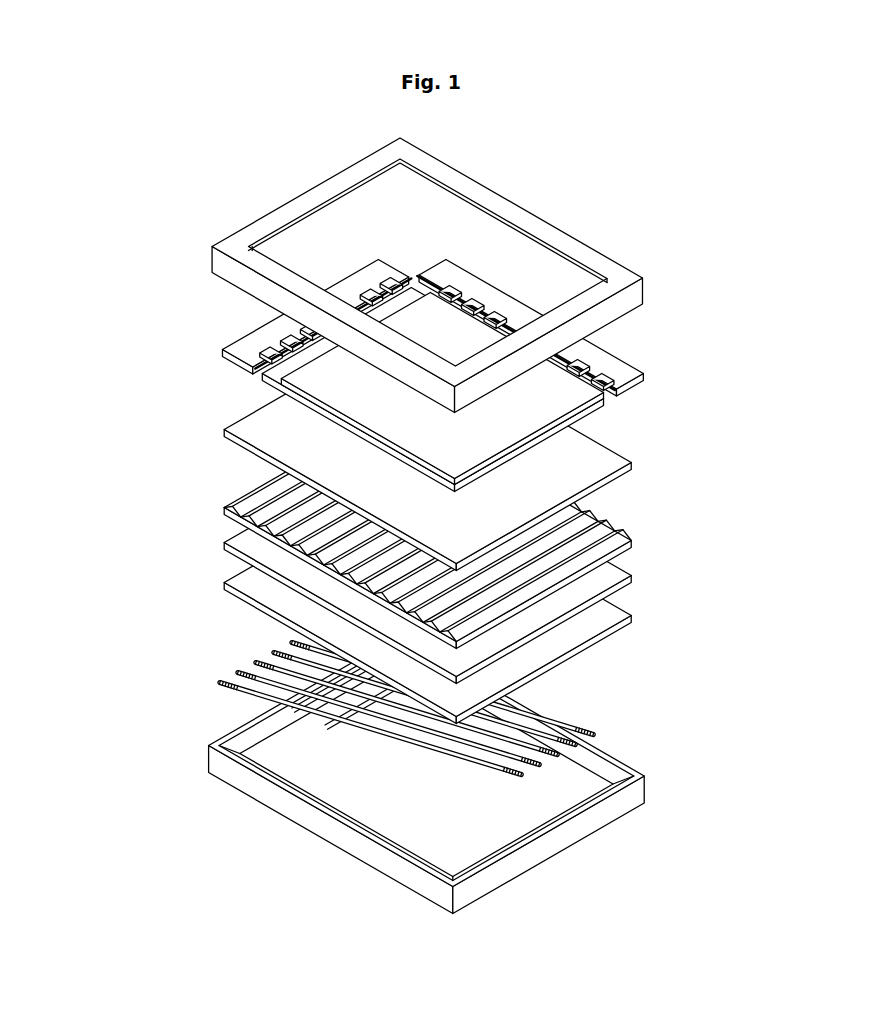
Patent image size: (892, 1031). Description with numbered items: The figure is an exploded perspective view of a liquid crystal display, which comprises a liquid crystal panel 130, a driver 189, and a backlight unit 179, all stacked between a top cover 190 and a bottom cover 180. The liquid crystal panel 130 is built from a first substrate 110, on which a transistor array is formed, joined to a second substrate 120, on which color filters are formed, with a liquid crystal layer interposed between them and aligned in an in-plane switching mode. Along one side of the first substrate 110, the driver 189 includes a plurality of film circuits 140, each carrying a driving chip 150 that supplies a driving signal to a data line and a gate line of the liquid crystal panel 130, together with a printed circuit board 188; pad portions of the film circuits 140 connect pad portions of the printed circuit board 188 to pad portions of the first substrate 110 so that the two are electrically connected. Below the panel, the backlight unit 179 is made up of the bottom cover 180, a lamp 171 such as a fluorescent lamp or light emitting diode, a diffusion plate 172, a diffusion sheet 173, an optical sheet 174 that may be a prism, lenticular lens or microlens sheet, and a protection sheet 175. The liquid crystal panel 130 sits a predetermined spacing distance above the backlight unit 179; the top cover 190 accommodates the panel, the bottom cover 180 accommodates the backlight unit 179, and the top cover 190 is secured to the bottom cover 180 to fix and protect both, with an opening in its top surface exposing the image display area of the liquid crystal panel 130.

The first substrate 110 is at (580, 403).
The second substrate 120 is at (567, 430).
The liquid crystal panel 130 is at (526, 391).
The film circuits 140 is at (263, 368).
The driving chip 150 is at (263, 352).
The lamp 171 is at (597, 737).
The diffusion plate 172 is at (578, 625).
The diffusion sheet 173 is at (578, 588).
The optical sheet 174 is at (578, 550).
The protection sheet 175 is at (475, 450).
The backlight unit 179 is at (499, 621).
The bottom cover 180 is at (577, 828).
The printed circuit board 188 is at (263, 330).
The driver 189 is at (351, 372).
The top cover 190 is at (613, 313).